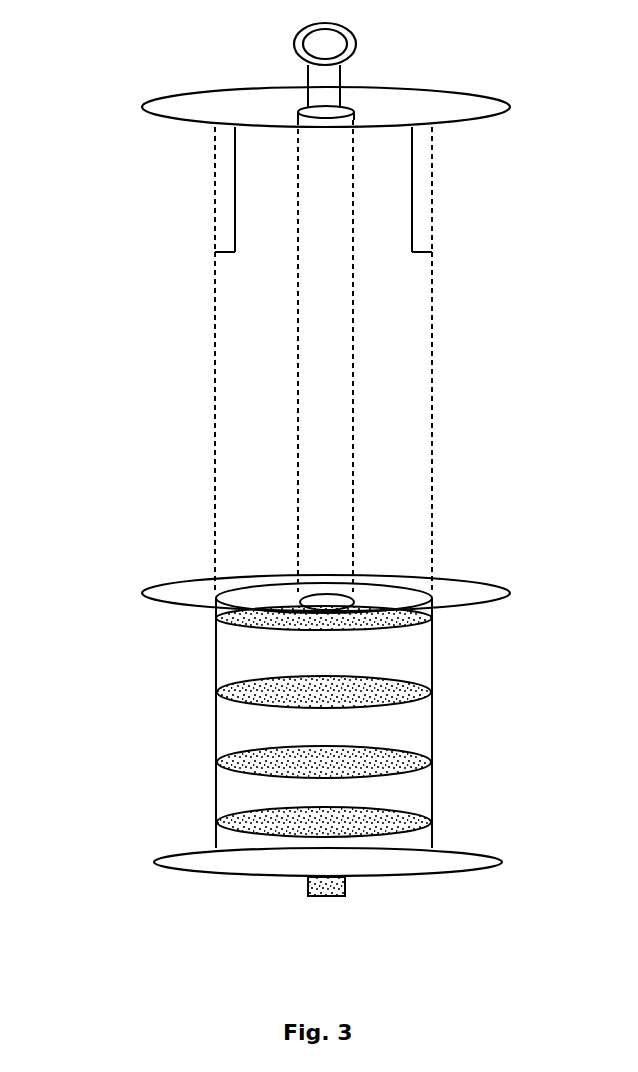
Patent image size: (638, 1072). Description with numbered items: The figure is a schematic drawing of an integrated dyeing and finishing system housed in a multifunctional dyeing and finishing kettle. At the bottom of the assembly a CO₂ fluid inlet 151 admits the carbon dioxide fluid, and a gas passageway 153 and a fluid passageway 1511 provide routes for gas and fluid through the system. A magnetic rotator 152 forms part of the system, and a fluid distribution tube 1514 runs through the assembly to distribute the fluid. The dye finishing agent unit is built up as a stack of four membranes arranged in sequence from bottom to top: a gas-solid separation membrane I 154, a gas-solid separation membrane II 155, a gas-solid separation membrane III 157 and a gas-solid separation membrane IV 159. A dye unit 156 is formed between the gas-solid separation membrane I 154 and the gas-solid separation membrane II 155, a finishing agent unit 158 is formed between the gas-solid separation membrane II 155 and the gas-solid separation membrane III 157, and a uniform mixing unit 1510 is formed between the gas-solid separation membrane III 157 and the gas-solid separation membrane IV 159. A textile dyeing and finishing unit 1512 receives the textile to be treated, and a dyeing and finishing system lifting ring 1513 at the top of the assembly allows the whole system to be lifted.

The CO₂ fluid inlet 151 is at (345, 883).
The magnetic rotator 152 is at (420, 176).
The gas passageway 153 is at (257, 853).
The gas-solid separation membrane I 154 is at (405, 815).
The gas-solid separation membrane II 155 is at (405, 748).
The dye unit 156 is at (257, 788).
The gas-solid separation membrane III 157 is at (395, 677).
The finishing agent unit 158 is at (257, 725).
The gas-solid separation membrane IV 159 is at (390, 622).
The uniform mixing unit 1510 is at (256, 646).
The fluid passageway 1511 is at (222, 594).
The textile dyeing and finishing unit 1512 is at (257, 297).
The dyeing and finishing system lifting ring 1513 is at (315, 45).
The fluid distribution tube 1514 is at (353, 335).